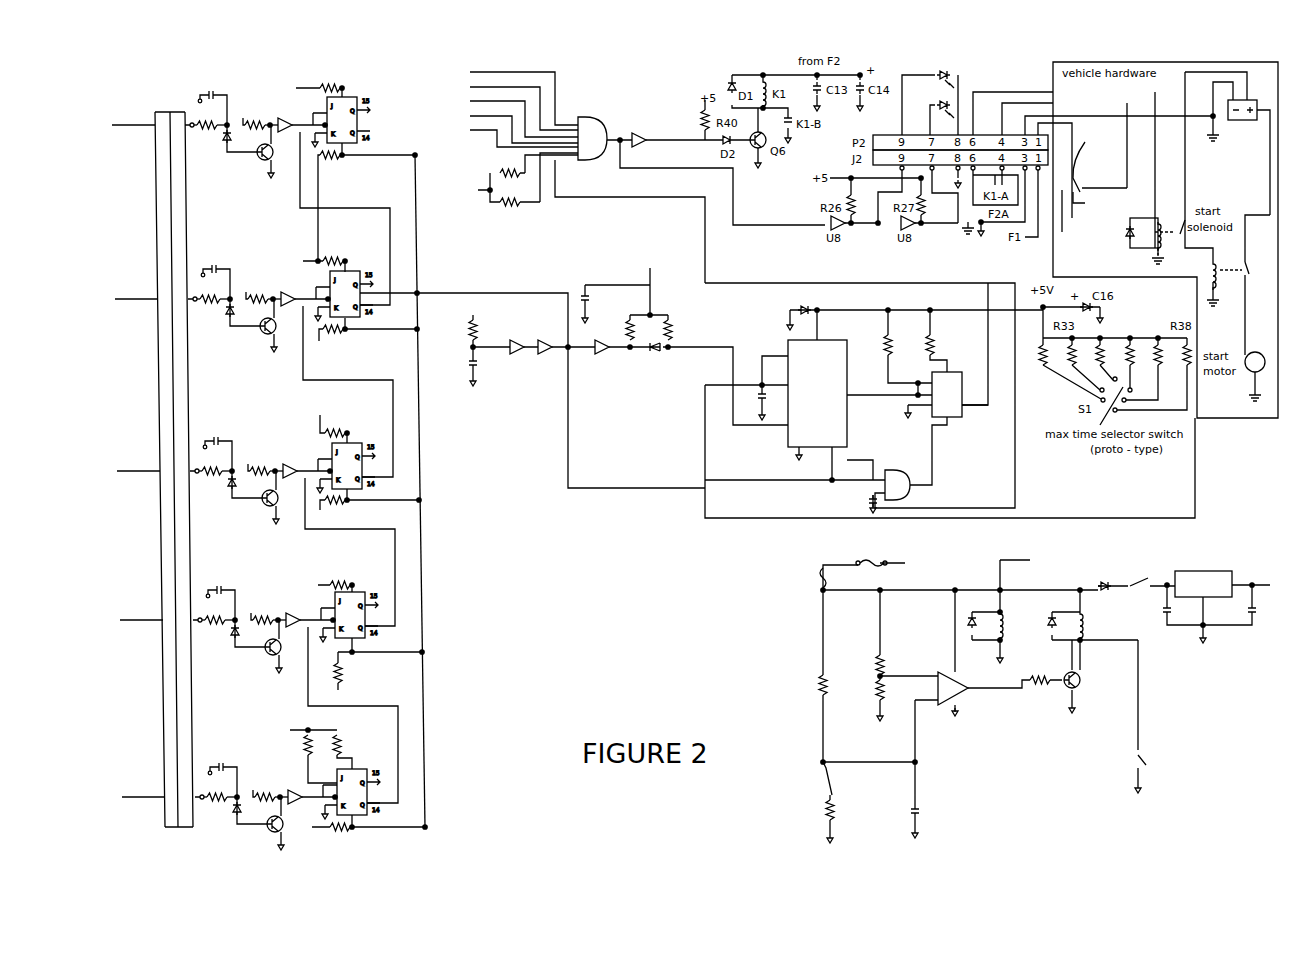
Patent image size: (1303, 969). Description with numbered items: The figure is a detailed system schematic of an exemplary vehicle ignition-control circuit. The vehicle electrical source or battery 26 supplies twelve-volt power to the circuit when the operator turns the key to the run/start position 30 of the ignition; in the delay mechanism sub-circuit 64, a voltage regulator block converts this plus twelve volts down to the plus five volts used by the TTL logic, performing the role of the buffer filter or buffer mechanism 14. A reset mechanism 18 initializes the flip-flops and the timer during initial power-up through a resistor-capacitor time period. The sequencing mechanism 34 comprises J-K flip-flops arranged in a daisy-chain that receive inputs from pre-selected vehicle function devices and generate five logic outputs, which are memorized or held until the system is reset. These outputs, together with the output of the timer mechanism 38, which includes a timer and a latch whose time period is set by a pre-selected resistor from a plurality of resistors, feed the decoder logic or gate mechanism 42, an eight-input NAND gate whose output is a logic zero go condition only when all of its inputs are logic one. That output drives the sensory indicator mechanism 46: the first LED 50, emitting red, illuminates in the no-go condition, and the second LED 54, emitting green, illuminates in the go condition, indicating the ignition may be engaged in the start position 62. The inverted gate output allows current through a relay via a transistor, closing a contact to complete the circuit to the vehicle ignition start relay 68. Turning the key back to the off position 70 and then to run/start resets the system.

The buffer filter or buffer mechanism 14 is at (270, 65).
The sequencing mechanism 34 is at (395, 58).
The decoder logic or gate mechanism 42 is at (607, 130).
The sensory indicator mechanism 46 is at (961, 67).
The second LED (green) 54 is at (955, 72).
The first LED (red) 50 is at (980, 79).
The run/start position of vehicle ignition 30 is at (1080, 145).
The start position of vehicle ignition 62 is at (1082, 195).
The off position of vehicle ignition 70 is at (1076, 223).
The vehicle ignition start relay 68 is at (1128, 248).
The vehicle electrical source or battery 26 is at (1240, 118).
The reset mechanism 18 is at (675, 365).
The timer mechanism 38 is at (1195, 525).
The delay mechanism sub-circuit 64 is at (1262, 845).